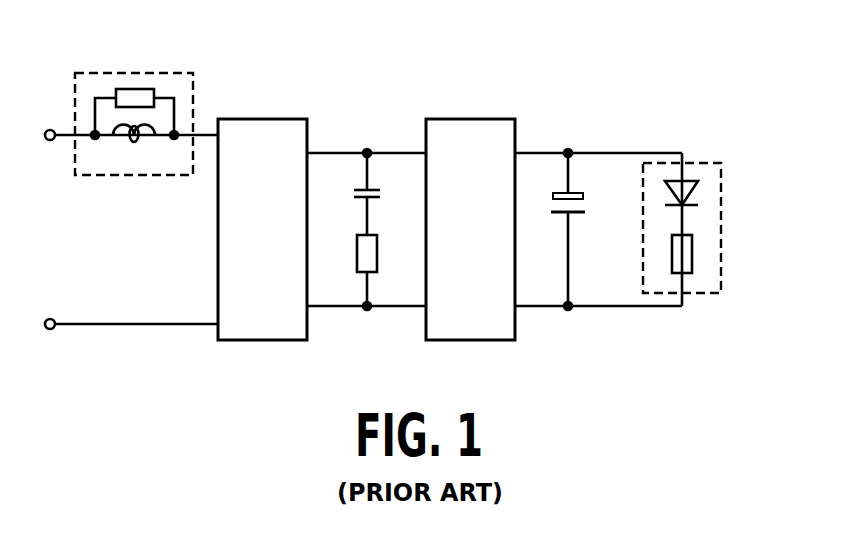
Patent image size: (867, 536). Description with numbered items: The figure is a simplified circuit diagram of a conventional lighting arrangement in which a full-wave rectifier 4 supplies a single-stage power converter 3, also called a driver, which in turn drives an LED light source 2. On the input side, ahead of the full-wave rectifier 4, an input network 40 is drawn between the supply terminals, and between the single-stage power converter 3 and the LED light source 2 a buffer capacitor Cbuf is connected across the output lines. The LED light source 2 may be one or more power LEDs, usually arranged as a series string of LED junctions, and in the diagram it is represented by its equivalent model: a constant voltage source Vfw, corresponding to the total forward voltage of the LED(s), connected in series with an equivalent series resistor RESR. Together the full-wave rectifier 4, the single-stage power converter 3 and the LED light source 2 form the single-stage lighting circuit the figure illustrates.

The input filter 40 is at (146, 72).
The full-wave rectifier 4 is at (260, 118).
The single-stage power converter 3 is at (470, 118).
The LED light source 2 is at (720, 190).
The buffer capacitor Cbuf is at (584, 196).
The constant voltage source Vfw is at (699, 195).
The equivalent series resistor RESR is at (693, 260).